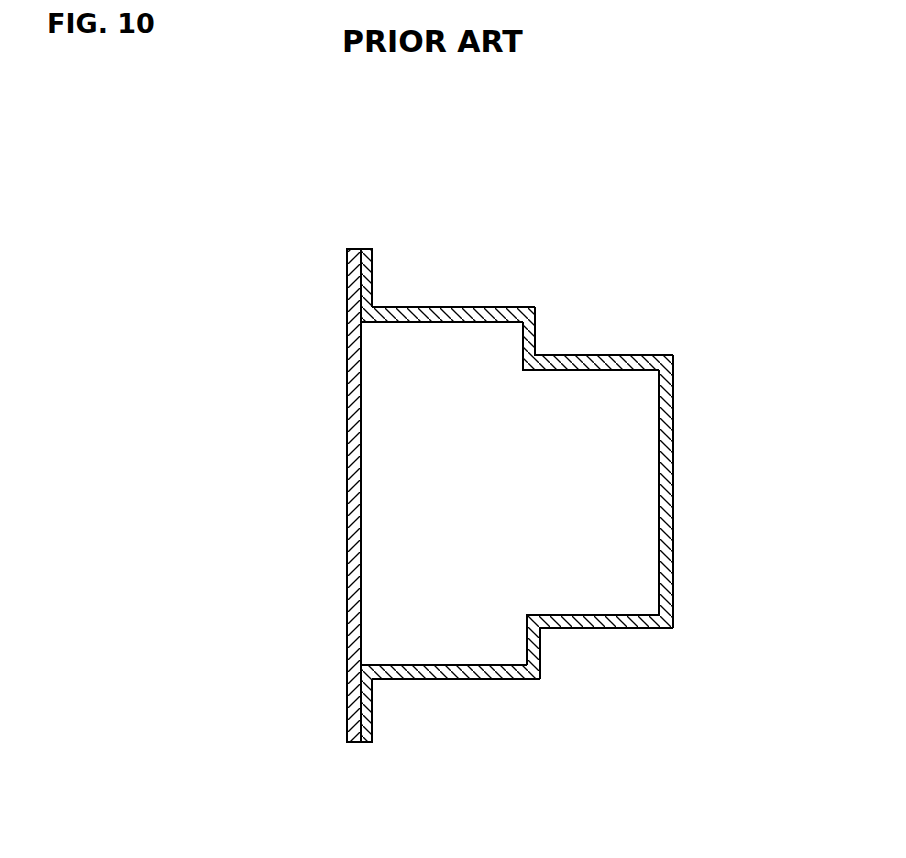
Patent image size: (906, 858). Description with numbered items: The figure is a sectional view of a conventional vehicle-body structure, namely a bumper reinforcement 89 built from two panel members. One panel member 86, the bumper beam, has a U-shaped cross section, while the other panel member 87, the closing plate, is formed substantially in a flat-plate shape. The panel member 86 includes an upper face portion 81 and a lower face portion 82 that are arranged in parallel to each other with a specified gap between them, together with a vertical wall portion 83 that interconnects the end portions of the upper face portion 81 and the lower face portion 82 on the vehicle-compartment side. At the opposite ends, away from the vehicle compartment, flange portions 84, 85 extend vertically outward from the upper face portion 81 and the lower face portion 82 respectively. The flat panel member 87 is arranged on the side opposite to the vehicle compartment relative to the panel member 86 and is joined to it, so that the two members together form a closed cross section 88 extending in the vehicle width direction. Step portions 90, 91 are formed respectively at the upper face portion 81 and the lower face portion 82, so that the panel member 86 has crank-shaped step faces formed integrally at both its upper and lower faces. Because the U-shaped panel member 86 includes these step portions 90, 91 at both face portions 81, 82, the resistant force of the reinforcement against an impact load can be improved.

The upper face portion 81 is at (497, 307).
The lower face portion 82 is at (497, 680).
The vertical wall portion 83 is at (673, 472).
The flange portion 84 is at (372, 290).
The flange portion 85 is at (372, 726).
The panel member (bumper beam) 86 is at (678, 402).
The panel member (closing plate) 87 is at (347, 490).
The closed cross section 88 is at (468, 492).
The bumper reinforcement 89 is at (406, 201).
The step portion 90 is at (535, 335).
The step portion 91 is at (540, 648).